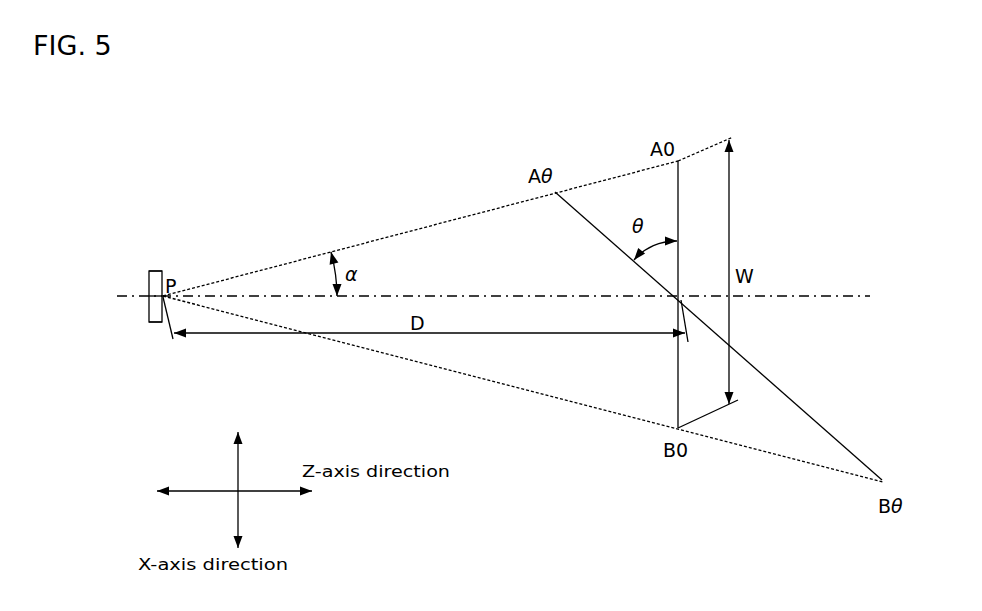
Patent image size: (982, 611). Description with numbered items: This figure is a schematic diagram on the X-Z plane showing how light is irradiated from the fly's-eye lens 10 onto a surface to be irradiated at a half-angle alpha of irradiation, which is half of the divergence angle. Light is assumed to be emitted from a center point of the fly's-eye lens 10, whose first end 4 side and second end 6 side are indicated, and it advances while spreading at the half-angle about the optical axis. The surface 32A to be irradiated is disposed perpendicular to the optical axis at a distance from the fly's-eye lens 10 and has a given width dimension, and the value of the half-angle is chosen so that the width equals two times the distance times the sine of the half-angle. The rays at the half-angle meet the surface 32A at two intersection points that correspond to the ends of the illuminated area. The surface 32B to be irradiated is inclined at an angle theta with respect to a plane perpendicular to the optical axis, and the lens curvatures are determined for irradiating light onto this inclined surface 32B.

The fly's-eye lens 10 is at (160, 284).
The first end 4 is at (155, 254).
The second end 6 is at (156, 336).
The surface to be irradiated 32A is at (676, 383).
The surface to be irradiated 32B is at (801, 408).